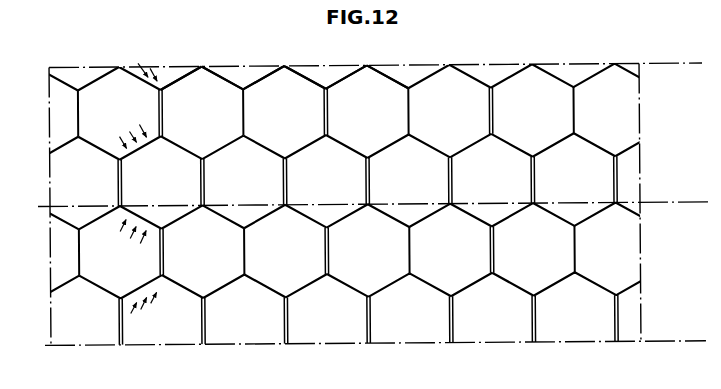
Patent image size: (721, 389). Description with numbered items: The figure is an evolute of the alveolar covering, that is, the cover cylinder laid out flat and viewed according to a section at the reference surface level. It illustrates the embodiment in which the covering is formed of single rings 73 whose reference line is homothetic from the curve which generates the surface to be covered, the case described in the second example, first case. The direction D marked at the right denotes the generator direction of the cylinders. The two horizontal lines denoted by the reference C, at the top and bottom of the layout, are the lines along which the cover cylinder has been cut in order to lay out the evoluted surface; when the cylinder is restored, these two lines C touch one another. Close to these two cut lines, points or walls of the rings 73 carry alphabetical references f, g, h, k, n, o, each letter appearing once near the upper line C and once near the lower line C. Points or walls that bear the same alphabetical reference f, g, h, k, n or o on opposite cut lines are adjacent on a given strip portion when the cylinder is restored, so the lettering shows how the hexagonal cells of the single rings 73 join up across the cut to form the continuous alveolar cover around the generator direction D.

The single rings 73 is at (94, 143).
The alphabetical reference f is at (187, 74).
The alphabetical reference g is at (219, 74).
The alphabetical reference h is at (269, 74).
The alphabetical reference k is at (301, 74).
The alphabetical reference n is at (352, 74).
The alphabetical reference o is at (384, 74).
The cut line C is at (680, 62).
The generator direction D is at (685, 210).